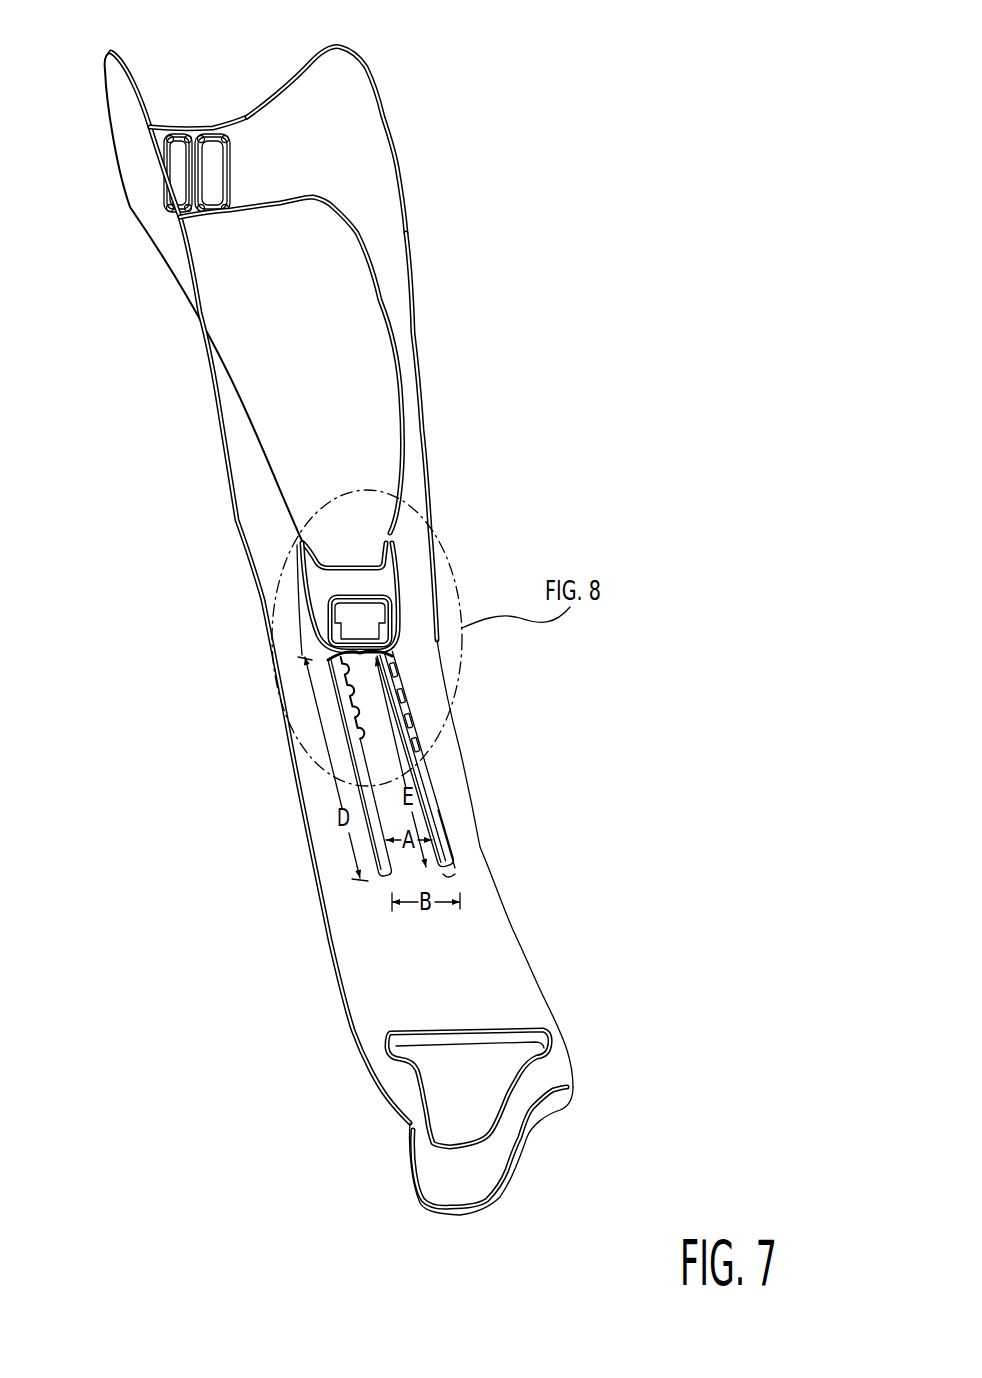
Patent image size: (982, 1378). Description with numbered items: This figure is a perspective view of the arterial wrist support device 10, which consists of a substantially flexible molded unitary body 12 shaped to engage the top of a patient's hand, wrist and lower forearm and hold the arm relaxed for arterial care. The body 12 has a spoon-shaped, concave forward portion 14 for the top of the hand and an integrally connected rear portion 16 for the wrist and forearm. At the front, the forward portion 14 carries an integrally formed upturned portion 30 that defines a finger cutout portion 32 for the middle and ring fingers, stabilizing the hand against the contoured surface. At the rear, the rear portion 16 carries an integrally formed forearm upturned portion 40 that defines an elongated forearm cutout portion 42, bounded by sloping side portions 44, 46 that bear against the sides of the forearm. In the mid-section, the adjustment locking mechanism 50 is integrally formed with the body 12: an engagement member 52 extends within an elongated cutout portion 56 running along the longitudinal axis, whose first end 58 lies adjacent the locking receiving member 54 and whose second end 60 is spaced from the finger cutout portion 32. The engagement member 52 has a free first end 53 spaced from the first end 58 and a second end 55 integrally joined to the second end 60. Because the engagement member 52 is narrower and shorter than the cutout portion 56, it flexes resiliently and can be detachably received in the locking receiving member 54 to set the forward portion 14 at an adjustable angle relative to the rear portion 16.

The arterial wrist support device 10 is at (200, 440).
The molded unitary body 12 is at (478, 828).
The forward portion 14 is at (460, 1218).
The rear portion 16 is at (355, 46).
The upturned portion 30 is at (487, 1190).
The finger cutout portion 32 is at (490, 1097).
The forearm upturned portion 40 is at (305, 118).
The forearm cutout portion 42 is at (363, 325).
The sloping side portion 44 is at (413, 387).
The sloping side portion 46 is at (249, 470).
The adjustment locking mechanism 50 is at (410, 622).
The engagement member 52 is at (430, 808).
The first end of engagement member 53 is at (360, 665).
The locking receiving member 54 is at (383, 583).
The second end of engagement member 55 is at (446, 882).
The elongated cutout portion 56 is at (335, 752).
The first end of cutout portion 58 is at (302, 660).
The second end of cutout portion 60 is at (446, 864).